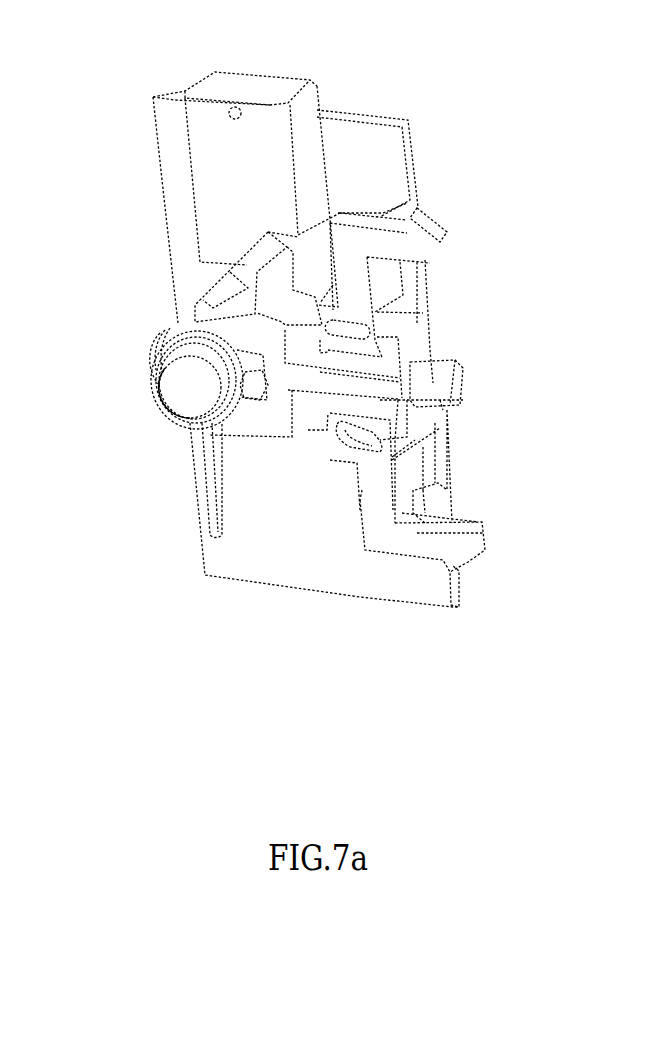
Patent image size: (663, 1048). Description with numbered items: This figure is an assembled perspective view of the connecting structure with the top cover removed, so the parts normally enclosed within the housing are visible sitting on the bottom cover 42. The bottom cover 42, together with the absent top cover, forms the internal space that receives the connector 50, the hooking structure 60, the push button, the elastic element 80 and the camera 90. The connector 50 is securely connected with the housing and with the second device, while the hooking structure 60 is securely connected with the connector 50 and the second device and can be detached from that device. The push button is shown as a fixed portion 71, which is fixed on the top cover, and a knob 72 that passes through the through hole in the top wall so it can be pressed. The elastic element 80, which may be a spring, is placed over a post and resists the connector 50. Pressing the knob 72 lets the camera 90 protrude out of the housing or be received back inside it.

The bottom cover 42 is at (185, 98).
The camera 90 is at (270, 105).
The hooking structure 60 is at (385, 246).
The connector 50 is at (306, 418).
The fixed portion 71 is at (262, 351).
The knob 72 is at (182, 398).
The elastic element 80 is at (160, 334).